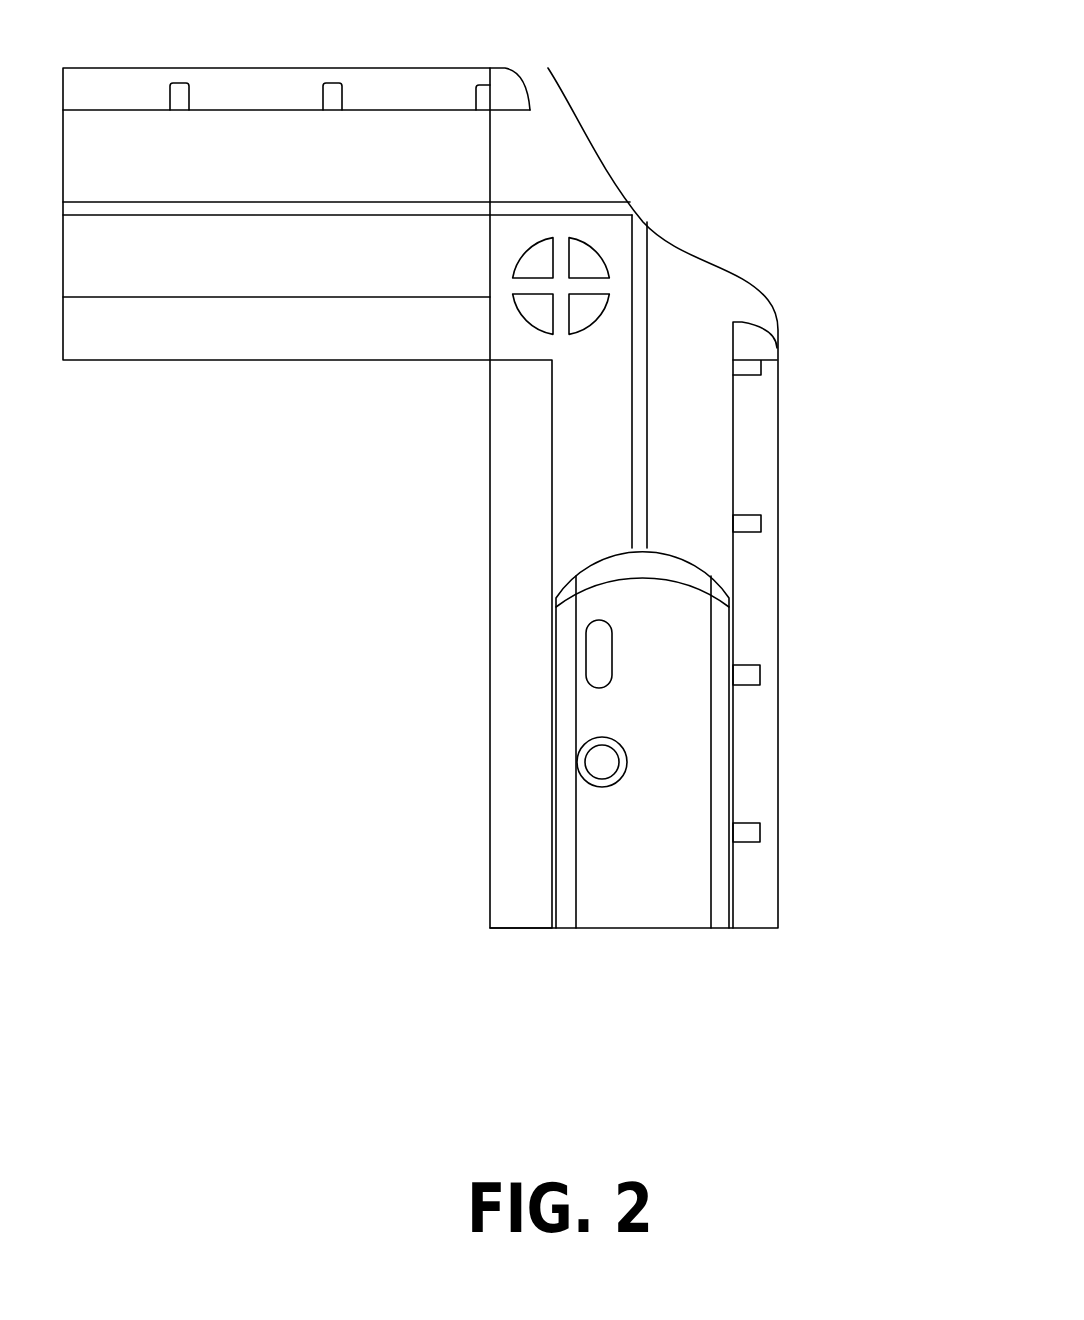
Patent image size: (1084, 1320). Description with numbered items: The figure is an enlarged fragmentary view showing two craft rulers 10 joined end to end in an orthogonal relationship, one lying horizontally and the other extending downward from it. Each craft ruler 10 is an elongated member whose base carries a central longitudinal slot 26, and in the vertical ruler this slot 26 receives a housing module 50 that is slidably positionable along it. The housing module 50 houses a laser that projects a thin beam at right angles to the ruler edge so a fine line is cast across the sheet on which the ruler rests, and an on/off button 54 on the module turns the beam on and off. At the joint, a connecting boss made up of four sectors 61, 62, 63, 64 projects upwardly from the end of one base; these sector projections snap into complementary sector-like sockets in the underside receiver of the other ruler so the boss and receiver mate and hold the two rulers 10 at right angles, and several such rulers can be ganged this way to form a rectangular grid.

The craft ruler 10 is at (836, 370).
The central longitudinal slot 26 is at (638, 390).
The housing module 50 is at (732, 740).
The on/off button 54 is at (600, 648).
The sector 61 is at (585, 257).
The sector 62 is at (538, 250).
The sector 63 is at (540, 313).
The sector 64 is at (587, 310).